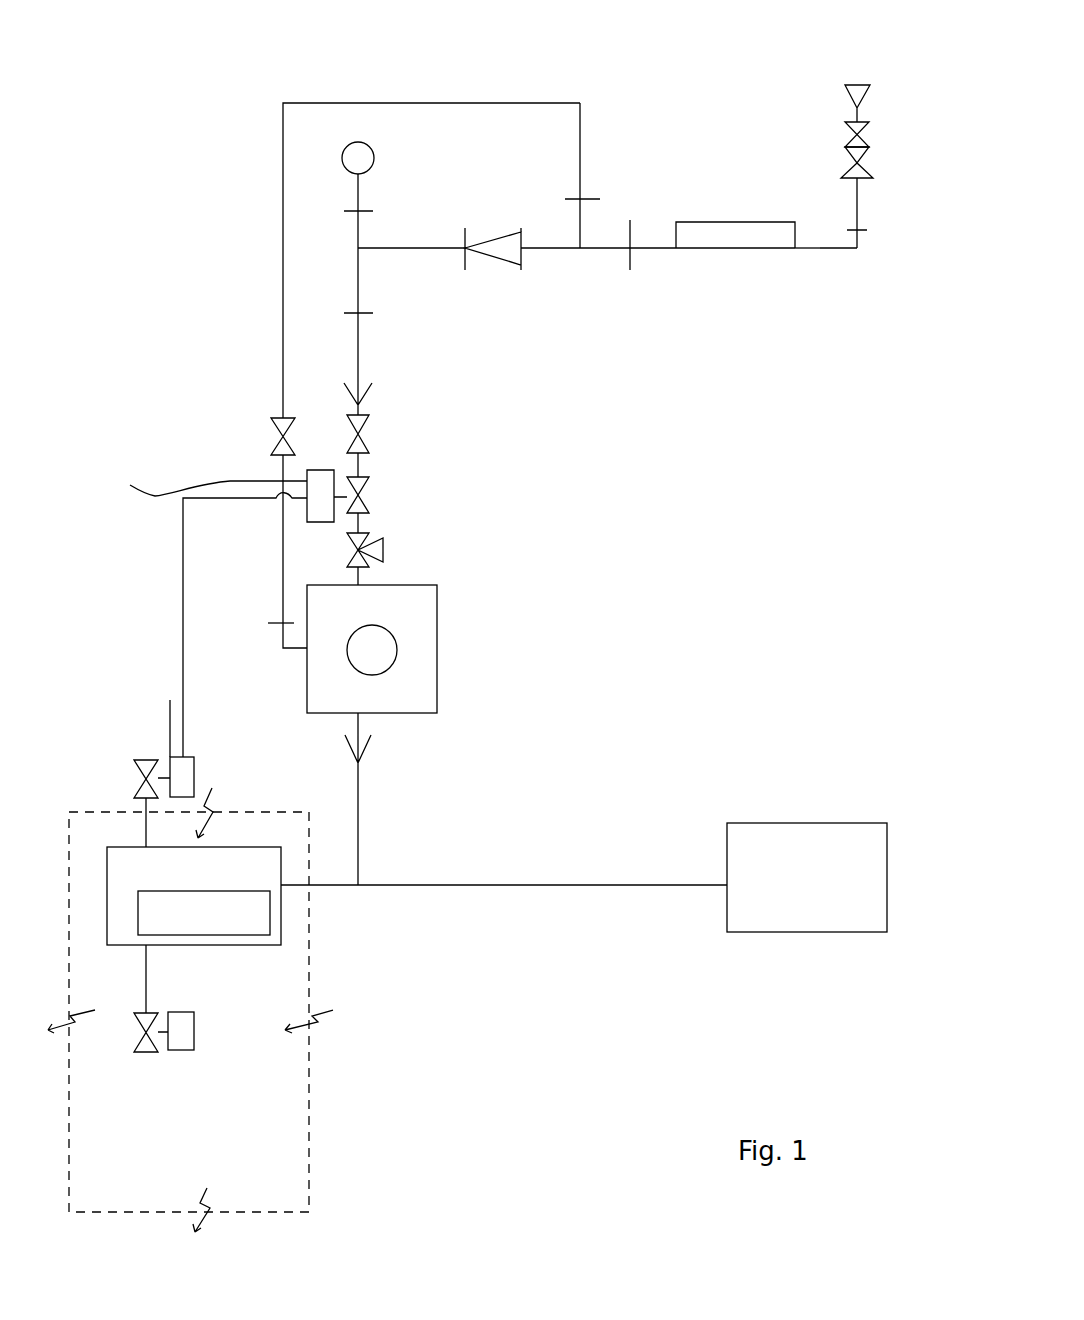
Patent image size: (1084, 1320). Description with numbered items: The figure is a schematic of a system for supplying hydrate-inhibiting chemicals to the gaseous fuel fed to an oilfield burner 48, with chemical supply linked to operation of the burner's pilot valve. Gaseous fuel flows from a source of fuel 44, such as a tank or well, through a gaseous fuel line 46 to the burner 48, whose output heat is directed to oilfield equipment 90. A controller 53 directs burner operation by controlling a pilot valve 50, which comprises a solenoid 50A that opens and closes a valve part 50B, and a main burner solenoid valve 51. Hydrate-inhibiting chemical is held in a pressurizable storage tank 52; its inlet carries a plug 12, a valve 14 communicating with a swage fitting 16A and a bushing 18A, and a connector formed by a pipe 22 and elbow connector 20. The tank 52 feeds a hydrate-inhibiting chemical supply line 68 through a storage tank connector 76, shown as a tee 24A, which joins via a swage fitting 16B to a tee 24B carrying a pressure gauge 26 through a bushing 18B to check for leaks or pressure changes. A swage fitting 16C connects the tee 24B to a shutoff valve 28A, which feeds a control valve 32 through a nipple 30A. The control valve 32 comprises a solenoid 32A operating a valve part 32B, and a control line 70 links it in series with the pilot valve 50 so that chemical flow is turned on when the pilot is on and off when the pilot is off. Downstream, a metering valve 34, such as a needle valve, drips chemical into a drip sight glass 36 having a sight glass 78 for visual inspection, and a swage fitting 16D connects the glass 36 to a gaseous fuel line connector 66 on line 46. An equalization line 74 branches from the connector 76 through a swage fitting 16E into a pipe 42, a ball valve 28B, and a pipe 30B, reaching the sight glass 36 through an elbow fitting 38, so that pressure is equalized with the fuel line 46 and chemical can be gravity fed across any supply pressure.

The plug 12 is at (845, 86).
The valve 14 is at (864, 134).
The swage fitting 16A is at (868, 163).
The swage fitting 16B is at (521, 268).
The swage fitting 16C is at (360, 352).
The swage fitting 16D is at (362, 752).
The swage fitting 16E is at (592, 200).
The bushing 18A is at (872, 182).
The bushing 18B is at (373, 211).
The elbow connector 20 is at (848, 250).
The pipe 22 is at (812, 250).
The tee 24A is at (580, 250).
The tee 24B is at (362, 258).
The pressure gauge 26 is at (372, 150).
The shutoff valve 28A is at (364, 426).
The valve 28B is at (282, 438).
The nipple 30A is at (360, 460).
The pipe 30B is at (283, 543).
The control valve 32 is at (372, 495).
The solenoid 32A is at (214, 496).
The valve part 32B is at (362, 512).
The metering valve 34 is at (403, 553).
The drip sight glass 36 is at (412, 715).
The fitting 38 is at (280, 638).
The pipe 42 is at (283, 328).
The source of fuel 44 is at (733, 932).
The gaseous fuel line 46 is at (407, 885).
The burner 48 is at (230, 945).
The pilot valve 50 is at (194, 775).
The solenoid 50A is at (170, 700).
The valve part 50B is at (146, 760).
The main burner solenoid valve 51 is at (194, 1035).
The storage tank 52 is at (795, 222).
The controller 53 is at (138, 910).
The gaseous fuel line connector 66 is at (357, 868).
The hydrate-inhibiting chemical supply line 68 is at (360, 823).
The control line 70 is at (183, 715).
The equalization line 74 is at (283, 178).
The storage tank connector 76 is at (630, 270).
The sight glass 78 is at (397, 650).
The oilfield equipment 90 is at (309, 1090).